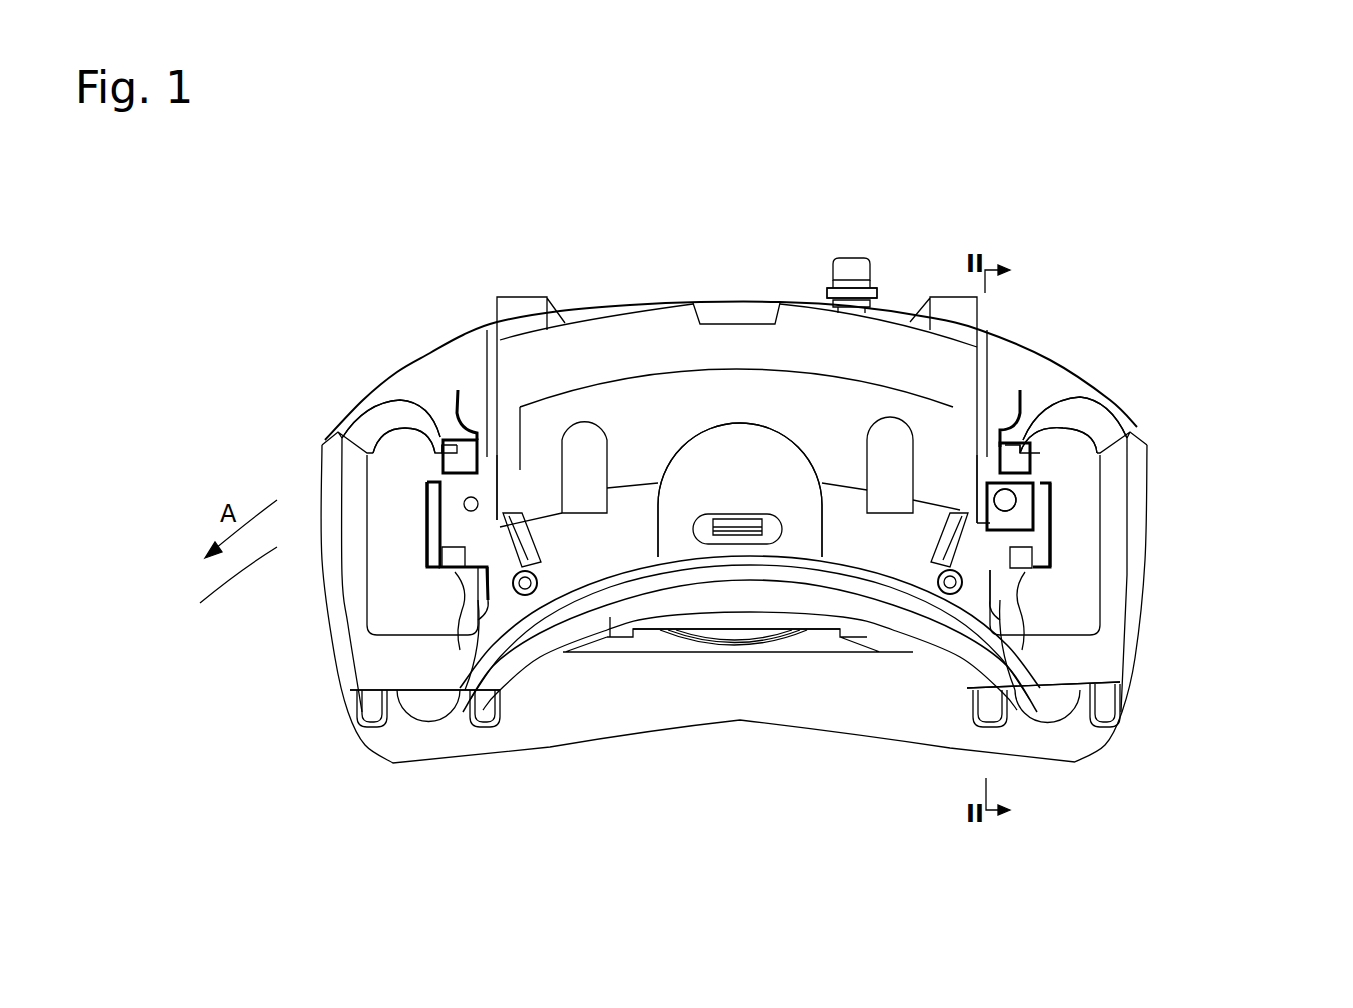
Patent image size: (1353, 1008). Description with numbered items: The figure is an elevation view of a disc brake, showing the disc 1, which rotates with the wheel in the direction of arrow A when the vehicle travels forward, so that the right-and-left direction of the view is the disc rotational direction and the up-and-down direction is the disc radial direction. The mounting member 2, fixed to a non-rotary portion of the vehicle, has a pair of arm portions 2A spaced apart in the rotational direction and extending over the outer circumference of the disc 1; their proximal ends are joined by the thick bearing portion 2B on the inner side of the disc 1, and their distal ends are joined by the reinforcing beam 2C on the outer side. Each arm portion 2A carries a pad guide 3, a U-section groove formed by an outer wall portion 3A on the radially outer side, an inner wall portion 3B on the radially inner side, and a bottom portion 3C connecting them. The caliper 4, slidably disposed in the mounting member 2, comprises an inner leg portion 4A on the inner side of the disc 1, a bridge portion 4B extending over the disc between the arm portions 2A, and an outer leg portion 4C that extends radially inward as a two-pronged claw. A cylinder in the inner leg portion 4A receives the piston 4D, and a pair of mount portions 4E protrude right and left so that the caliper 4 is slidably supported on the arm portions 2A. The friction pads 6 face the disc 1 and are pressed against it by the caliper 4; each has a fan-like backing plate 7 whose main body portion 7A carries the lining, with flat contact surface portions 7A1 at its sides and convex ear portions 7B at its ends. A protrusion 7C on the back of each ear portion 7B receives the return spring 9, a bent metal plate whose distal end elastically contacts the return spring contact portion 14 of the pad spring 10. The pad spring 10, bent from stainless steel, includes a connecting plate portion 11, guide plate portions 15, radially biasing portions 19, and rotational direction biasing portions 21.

The disc 1 is at (1157, 507).
The mounting member 2 is at (558, 748).
The arm portion 2A is at (373, 440).
The bearing portion 2B is at (867, 687).
The reinforcing beam 2C is at (610, 617).
The pad guide 3 is at (433, 493).
The outer wall portion 3A is at (443, 437).
The inner wall portion 3B is at (443, 557).
The bottom portion 3C is at (433, 533).
The caliper 4 is at (663, 305).
The inner leg portion 4A is at (790, 303).
The bridge portion 4B is at (602, 328).
The outer leg portion 4C is at (697, 420).
The piston 4D is at (722, 600).
The mount portion 4E is at (418, 388).
The friction pad 6 is at (652, 637).
The backing plate 7 is at (760, 617).
The main body portion 7A is at (482, 693).
The contact surface portion 7A1 is at (462, 638).
The ear portion 7B is at (453, 523).
The protrusion 7C is at (480, 500).
The return spring 9 is at (1012, 497).
The pad spring 10 is at (460, 390).
The connecting plate portion 11 is at (467, 440).
The return spring contact portion 14 is at (475, 450).
The guide plate portion 15 is at (470, 585).
The radially biasing portion 19 is at (480, 600).
The rotational direction biasing portion 21 is at (538, 579).